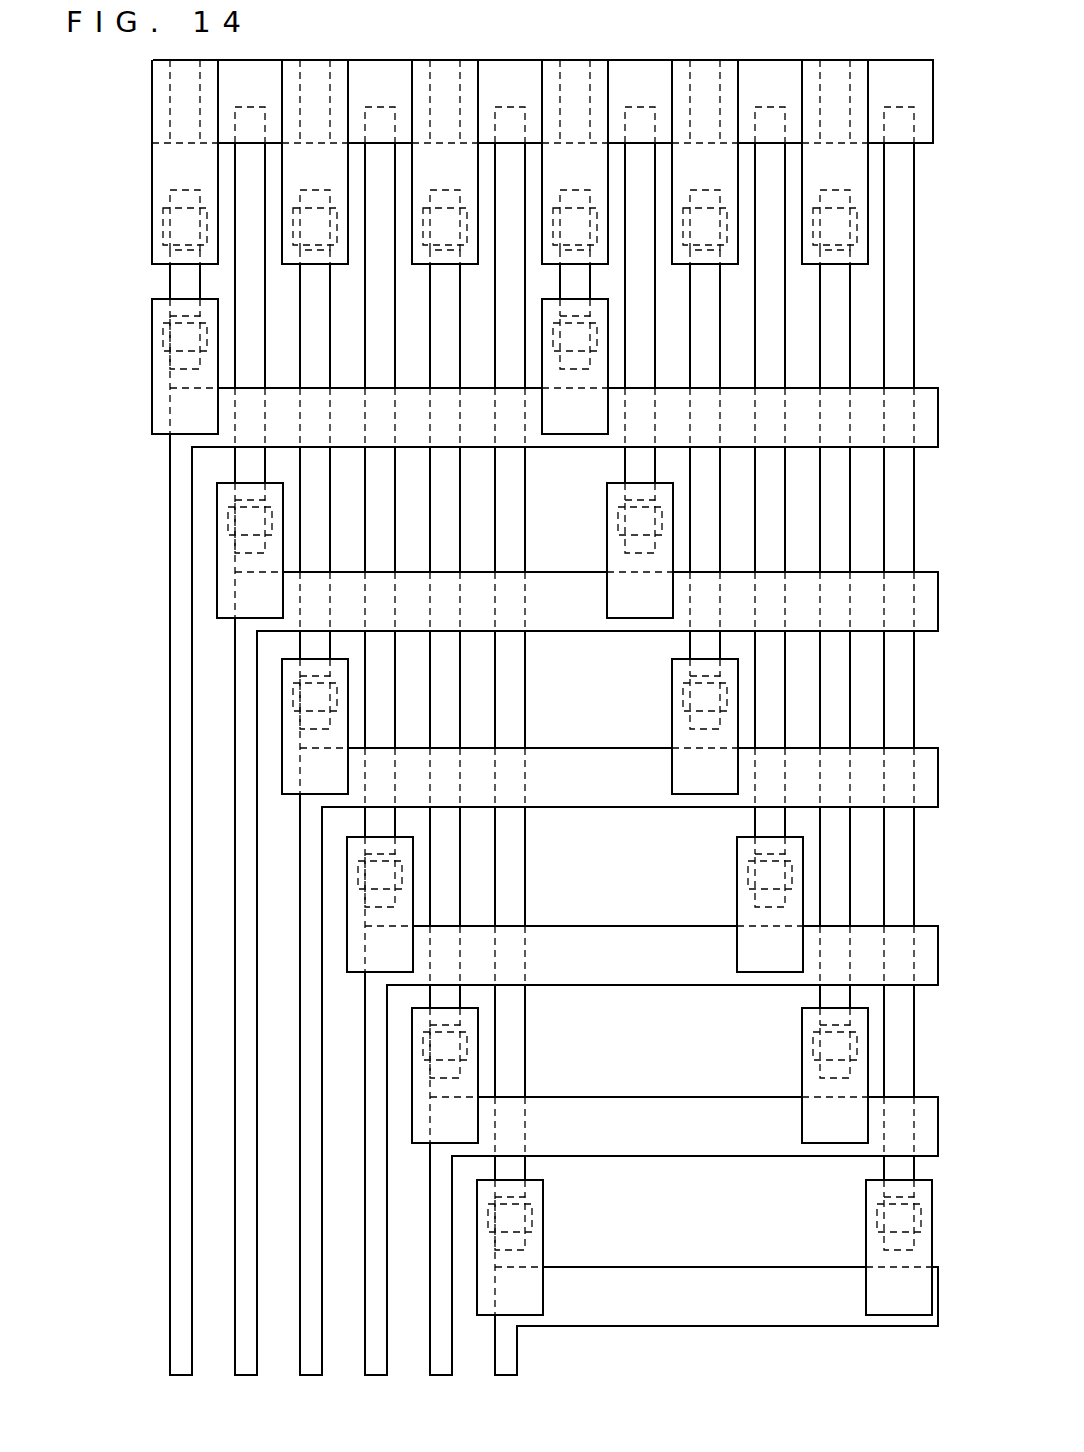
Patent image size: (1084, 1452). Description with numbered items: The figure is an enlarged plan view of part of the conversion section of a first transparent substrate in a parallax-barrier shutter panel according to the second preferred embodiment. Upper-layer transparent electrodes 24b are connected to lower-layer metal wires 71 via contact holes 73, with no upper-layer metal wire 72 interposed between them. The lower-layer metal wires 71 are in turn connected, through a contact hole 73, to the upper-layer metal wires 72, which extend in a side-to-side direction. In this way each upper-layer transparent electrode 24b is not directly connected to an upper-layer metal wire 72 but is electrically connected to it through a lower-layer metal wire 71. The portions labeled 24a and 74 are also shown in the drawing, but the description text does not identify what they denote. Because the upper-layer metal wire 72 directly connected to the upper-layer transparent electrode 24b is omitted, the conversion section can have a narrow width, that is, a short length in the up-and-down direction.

The upper pad portion (common connection strip) 24a is at (235, 84).
The upper-layer transparent electrode 24b is at (183, 170).
The contact hole 73 is at (182, 230).
The lower-layer metal wire 71 is at (248, 292).
The thin film transistor region 74 is at (163, 378).
The upper-layer metal wire 72 is at (182, 702).